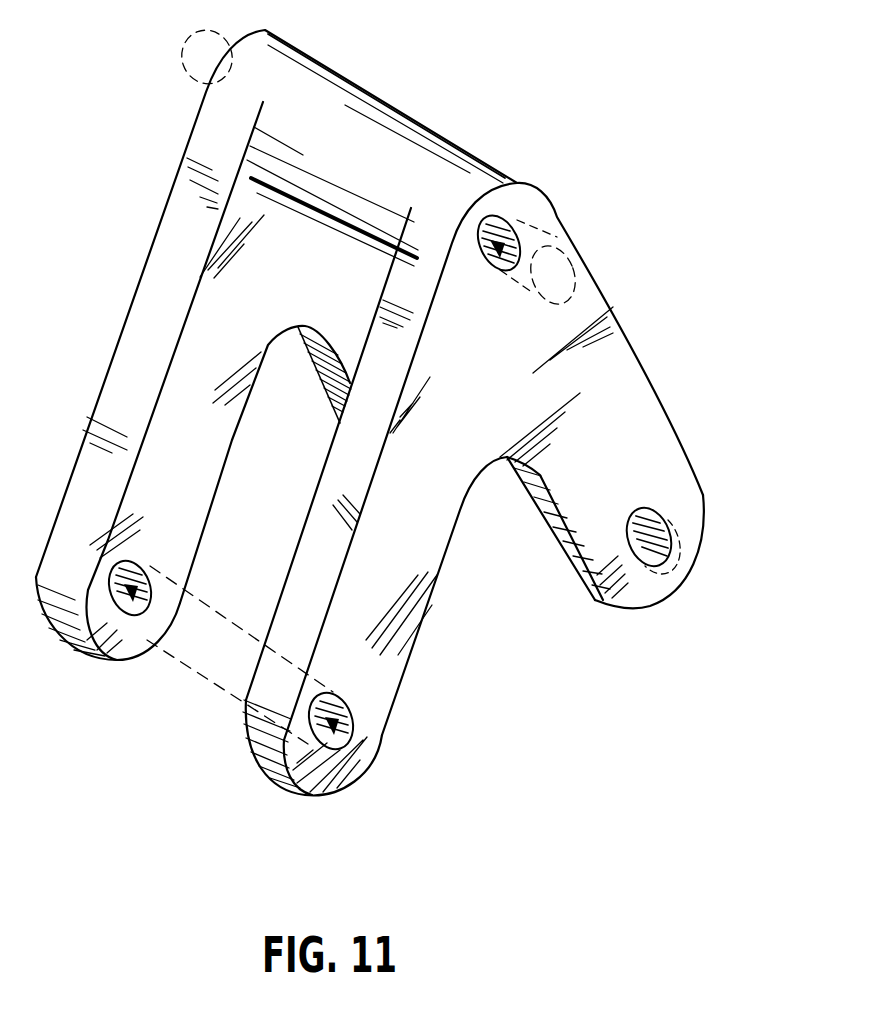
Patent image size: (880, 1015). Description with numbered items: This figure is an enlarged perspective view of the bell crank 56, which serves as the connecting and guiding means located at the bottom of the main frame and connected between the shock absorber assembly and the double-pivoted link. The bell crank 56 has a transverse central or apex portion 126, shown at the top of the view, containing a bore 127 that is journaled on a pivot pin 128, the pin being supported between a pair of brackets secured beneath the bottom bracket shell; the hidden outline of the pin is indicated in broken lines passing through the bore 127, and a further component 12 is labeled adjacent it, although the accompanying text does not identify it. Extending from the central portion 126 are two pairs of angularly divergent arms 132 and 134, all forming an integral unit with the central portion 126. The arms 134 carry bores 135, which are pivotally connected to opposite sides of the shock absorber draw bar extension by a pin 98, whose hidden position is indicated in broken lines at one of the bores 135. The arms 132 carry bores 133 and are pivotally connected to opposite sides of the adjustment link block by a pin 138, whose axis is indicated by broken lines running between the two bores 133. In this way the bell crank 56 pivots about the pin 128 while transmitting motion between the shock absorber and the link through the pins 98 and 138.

The bell crank 56 is at (482, 625).
The transverse central portion 126 is at (358, 143).
The bore 127 is at (494, 262).
The pivot pin 12 is at (510, 252).
The pivot pin 128 is at (527, 300).
The arms 134 is at (352, 314).
The arms 132 is at (210, 450).
The bores 135 is at (668, 512).
The pin 98 is at (677, 545).
The bores 133 is at (131, 590).
The pin 138 is at (190, 667).